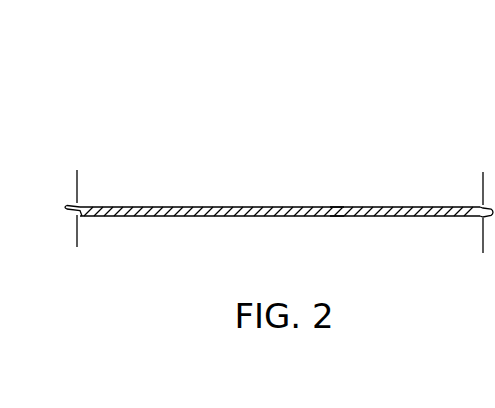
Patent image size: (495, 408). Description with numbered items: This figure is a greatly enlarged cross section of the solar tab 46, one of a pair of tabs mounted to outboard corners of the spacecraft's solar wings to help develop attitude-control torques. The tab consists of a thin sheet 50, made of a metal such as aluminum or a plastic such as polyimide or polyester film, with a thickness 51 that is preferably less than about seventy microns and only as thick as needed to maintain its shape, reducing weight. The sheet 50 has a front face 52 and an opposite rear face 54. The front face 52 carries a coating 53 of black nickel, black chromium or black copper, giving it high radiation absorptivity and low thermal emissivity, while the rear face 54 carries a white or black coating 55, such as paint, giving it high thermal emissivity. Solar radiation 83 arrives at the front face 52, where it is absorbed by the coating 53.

The solar tab 46 is at (196, 167).
The sheet 50 is at (220, 217).
The thickness 51 is at (337, 253).
The front face 52 is at (418, 210).
The coating 53 is at (121, 207).
The rear face 54 is at (418, 210).
The coating 55 is at (121, 207).
The solar radiation 83 is at (277, 33).